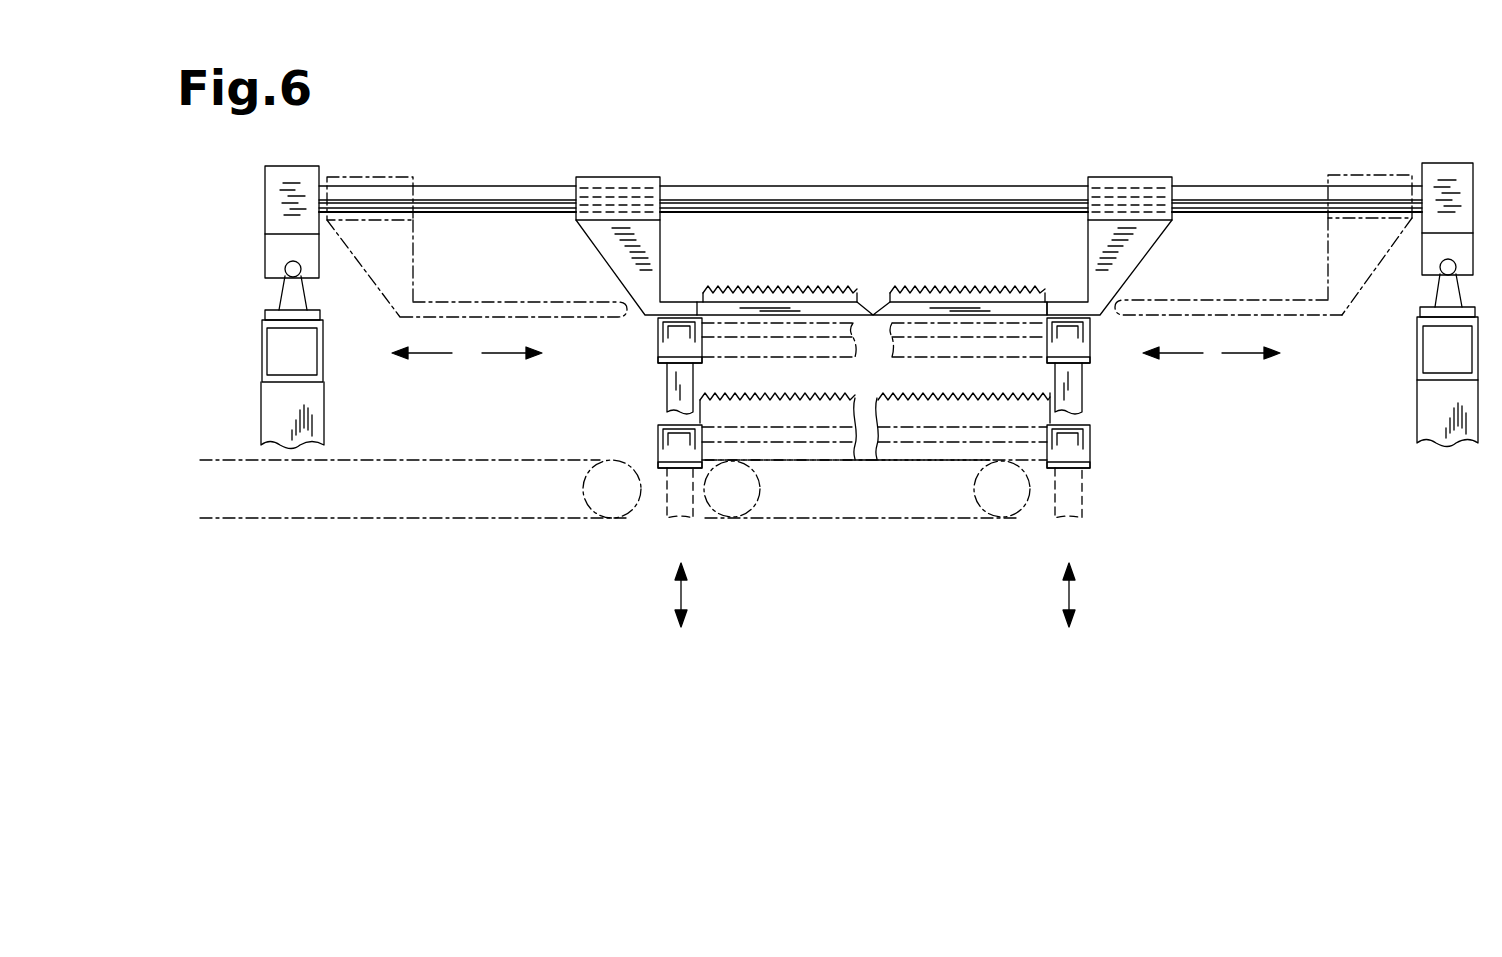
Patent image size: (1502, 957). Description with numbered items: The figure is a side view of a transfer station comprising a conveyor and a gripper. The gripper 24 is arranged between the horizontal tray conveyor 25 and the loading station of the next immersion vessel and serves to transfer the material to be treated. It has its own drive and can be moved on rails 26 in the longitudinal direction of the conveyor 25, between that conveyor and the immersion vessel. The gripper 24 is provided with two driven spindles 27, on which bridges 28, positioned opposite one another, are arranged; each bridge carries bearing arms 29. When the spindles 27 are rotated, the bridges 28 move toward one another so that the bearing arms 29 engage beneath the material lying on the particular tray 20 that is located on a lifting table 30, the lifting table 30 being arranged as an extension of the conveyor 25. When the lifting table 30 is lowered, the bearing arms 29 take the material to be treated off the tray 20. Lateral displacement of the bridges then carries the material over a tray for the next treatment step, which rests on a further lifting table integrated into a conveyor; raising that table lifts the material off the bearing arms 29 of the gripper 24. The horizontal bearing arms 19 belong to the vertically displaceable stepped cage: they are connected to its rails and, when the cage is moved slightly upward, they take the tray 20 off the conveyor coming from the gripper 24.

The horizontal bearing arms 19 is at (670, 393).
The tray 20 is at (800, 435).
The gripper 24 is at (940, 158).
The horizontal tray conveyor 25 is at (312, 498).
The rails 26 is at (290, 292).
The driven spindles 27 is at (487, 195).
The bridges 28 is at (613, 193).
The bearing arms 29 is at (687, 305).
The lifting table 30 is at (910, 503).